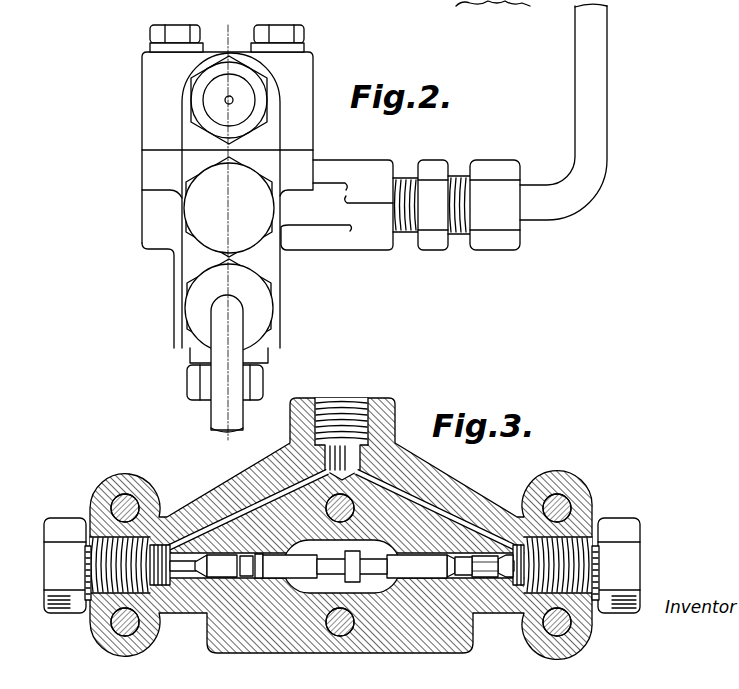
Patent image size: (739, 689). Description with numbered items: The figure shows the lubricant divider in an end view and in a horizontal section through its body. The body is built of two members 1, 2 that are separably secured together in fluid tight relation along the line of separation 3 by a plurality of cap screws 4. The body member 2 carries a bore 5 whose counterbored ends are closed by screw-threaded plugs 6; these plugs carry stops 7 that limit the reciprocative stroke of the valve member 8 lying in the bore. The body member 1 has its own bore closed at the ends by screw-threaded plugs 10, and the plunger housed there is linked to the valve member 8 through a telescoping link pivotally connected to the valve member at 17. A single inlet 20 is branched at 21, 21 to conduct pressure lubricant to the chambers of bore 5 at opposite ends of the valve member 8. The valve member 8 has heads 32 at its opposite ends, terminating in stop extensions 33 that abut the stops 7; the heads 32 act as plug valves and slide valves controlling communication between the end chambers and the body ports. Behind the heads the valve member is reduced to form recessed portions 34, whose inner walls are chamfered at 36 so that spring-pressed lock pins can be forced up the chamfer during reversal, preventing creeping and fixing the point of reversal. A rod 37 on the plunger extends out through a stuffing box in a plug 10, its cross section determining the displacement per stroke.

In FIG. 2, the body member 1 is at (142, 107).
In FIG. 2, the body member 2 is at (142, 213).
In FIG. 2, the line of separation 3 is at (142, 150).
In FIG. 2, the cap screws 4 is at (150, 33).
In FIG. 3, the cap screws 4 is at (118, 503).
In FIG. 3, the bore 5 is at (194, 572).
In FIG. 2, the screw-threaded plugs 6 is at (187, 212).
In FIG. 3, the screw-threaded plugs 6 is at (55, 521).
In FIG. 3, the stops 7 is at (160, 586).
In FIG. 3, the valve member 8 is at (422, 557).
In FIG. 2, the screw-threaded plugs 10 is at (199, 88).
In FIG. 3, the pivotal connection 17 is at (354, 583).
In FIG. 2, the inlet 20 is at (350, 167).
In FIG. 3, the inlet 20 is at (344, 407).
In FIG. 3, the branches 21 is at (228, 512).
In FIG. 3, the heads 32 is at (224, 578).
In FIG. 3, the stop extensions 33 is at (202, 578).
In FIG. 3, the recessed portions 34 is at (247, 578).
In FIG. 3, the chamfer 36 is at (260, 579).
In FIG. 2, the rod 37 is at (234, 99).